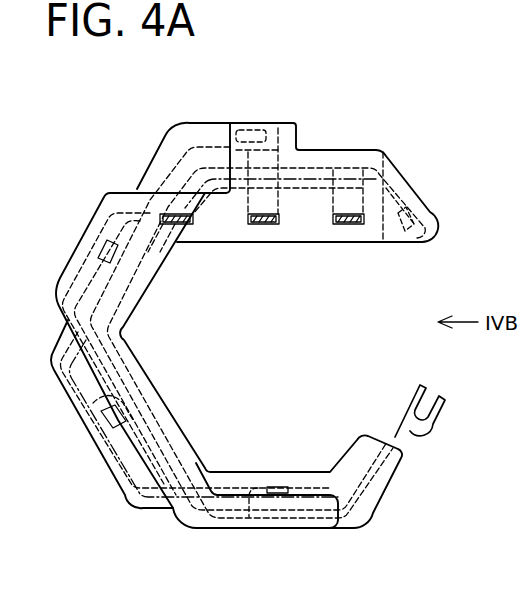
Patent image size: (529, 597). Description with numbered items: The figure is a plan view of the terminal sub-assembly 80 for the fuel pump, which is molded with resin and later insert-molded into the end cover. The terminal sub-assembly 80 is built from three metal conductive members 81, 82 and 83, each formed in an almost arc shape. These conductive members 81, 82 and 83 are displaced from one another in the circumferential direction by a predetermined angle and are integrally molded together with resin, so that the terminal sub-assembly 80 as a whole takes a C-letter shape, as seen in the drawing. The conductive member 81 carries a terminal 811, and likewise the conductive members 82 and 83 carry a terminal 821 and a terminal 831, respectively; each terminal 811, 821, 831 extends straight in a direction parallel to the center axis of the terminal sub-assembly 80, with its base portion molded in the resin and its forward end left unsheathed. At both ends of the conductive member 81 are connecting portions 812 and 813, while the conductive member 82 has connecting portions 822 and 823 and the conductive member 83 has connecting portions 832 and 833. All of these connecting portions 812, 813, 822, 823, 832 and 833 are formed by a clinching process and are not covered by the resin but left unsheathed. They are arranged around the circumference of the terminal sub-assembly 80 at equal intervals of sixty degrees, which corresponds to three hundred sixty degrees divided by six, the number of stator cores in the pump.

The terminal sub-assembly 80 is at (361, 133).
The conductive member 81 is at (318, 168).
The conductive member 82 is at (193, 122).
The conductive member 83 is at (160, 430).
The terminal 811 is at (345, 227).
The connecting portion 812 is at (430, 210).
The connecting portion 813 is at (100, 408).
The terminal 821 is at (258, 226).
The connecting portion 822 is at (257, 129).
The connecting portion 823 is at (255, 492).
The terminal 831 is at (181, 227).
The connecting portion 832 is at (88, 230).
The connecting portion 833 is at (440, 413).